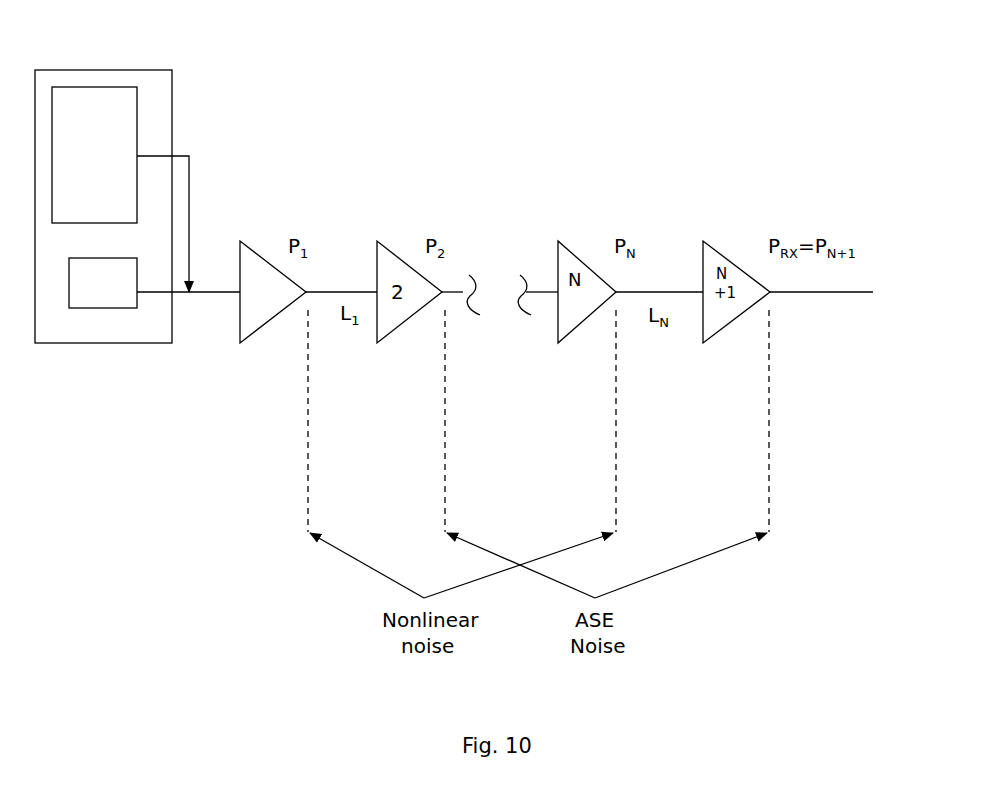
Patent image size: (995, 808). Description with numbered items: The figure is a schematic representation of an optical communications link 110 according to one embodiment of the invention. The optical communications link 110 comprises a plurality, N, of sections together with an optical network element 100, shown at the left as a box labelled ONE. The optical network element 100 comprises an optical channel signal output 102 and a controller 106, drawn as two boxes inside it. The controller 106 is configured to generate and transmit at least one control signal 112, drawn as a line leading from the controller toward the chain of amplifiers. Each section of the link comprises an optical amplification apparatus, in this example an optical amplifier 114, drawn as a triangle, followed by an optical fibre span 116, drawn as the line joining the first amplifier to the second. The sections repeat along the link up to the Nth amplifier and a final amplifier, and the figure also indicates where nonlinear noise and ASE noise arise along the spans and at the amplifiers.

The optical network element 100 is at (153, 122).
The optical channel signal output 102 is at (103, 292).
The controller 106 is at (87, 103).
The optical communications link 110 is at (618, 101).
The control signal 112 is at (190, 203).
The optical amplifier 114 is at (258, 308).
The optical fibre span 116 is at (327, 292).